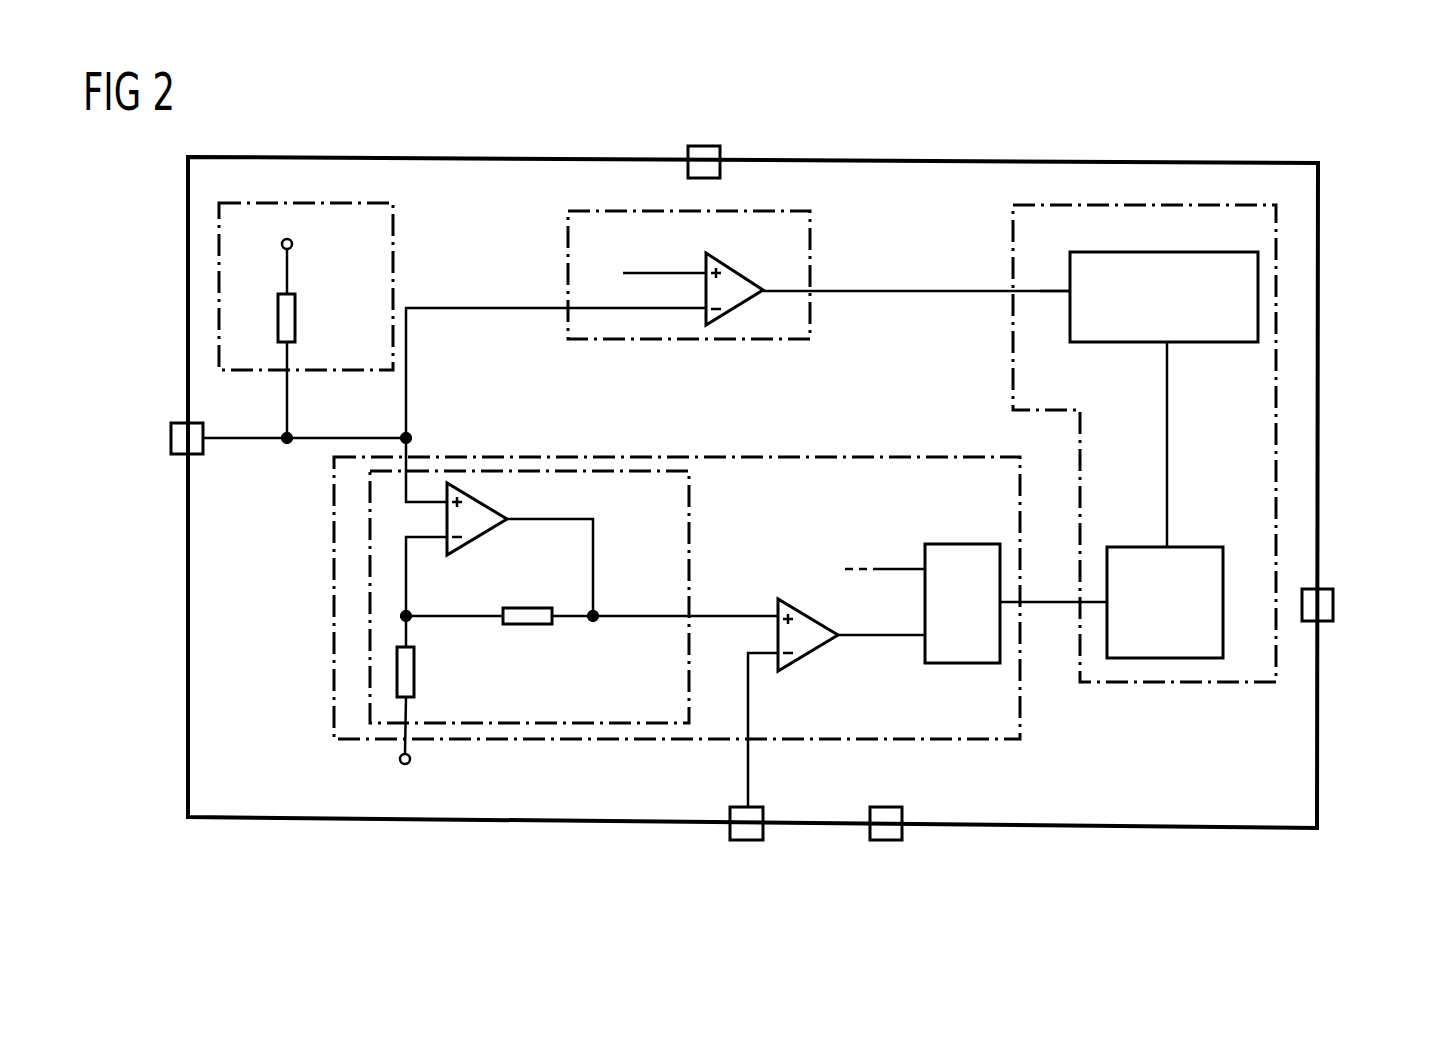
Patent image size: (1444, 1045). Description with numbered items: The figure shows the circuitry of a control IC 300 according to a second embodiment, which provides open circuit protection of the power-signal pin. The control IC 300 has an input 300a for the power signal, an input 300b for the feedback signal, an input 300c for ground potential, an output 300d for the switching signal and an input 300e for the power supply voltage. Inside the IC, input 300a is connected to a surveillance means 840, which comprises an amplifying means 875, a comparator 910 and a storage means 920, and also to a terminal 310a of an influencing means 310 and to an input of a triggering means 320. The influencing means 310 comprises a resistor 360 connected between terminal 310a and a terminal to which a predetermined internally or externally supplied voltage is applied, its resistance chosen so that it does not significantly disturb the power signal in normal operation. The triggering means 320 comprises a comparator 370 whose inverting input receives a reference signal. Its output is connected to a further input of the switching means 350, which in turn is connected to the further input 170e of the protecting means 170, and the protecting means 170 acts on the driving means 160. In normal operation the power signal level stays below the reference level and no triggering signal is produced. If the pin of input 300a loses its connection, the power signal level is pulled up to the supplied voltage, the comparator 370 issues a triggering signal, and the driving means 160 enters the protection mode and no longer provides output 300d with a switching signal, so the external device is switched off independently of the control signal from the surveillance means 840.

The control IC 300 is at (1248, 162).
The input for the power signal 300a is at (170, 438).
The input for the feedback signal 300b is at (747, 840).
The input for ground potential 300c is at (886, 840).
The output for the switching signal 300d is at (1333, 602).
The input for the power supply voltage 300e is at (707, 143).
The influencing means 310 is at (347, 286).
The terminal of the influencing means 310a is at (287, 370).
The triggering means 320 is at (731, 275).
The switching means 350 is at (1103, 443).
The resistor 360 is at (295, 318).
The comparator 370 is at (706, 258).
The driving means 160 is at (1185, 547).
The protecting means 170 is at (1200, 342).
The further input of the protecting means 170e is at (1070, 295).
The surveillance means 840 is at (719, 623).
The amplifying means 875 is at (689, 588).
The comparator 910 is at (807, 657).
The storage means 920 is at (963, 663).